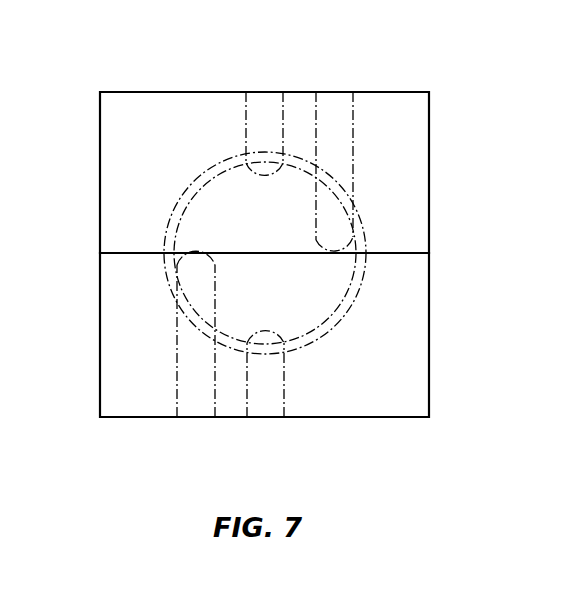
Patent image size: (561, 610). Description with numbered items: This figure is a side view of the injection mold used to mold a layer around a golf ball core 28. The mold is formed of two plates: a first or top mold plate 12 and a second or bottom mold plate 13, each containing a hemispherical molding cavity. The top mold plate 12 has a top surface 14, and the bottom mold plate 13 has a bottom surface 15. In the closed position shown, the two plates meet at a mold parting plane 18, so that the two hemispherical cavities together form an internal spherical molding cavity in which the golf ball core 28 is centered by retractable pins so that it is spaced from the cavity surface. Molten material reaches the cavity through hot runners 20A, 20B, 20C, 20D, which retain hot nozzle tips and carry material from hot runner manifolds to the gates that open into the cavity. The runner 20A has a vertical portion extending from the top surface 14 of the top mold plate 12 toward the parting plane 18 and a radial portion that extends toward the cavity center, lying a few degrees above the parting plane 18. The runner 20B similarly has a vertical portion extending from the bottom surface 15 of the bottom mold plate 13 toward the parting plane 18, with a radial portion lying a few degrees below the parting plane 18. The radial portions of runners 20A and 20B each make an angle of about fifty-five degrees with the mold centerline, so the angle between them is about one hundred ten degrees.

The top mold plate 12 is at (430, 130).
The bottom mold plate 13 is at (430, 320).
The top surface 14 is at (299, 91).
The bottom surface 15 is at (376, 418).
The mold parting plane 18 is at (126, 253).
The hot runner 20A is at (353, 120).
The hot runner 20B is at (177, 380).
The hot runner 20C is at (284, 380).
The hot runner 20D is at (246, 120).
The golf ball core 28 is at (283, 289).